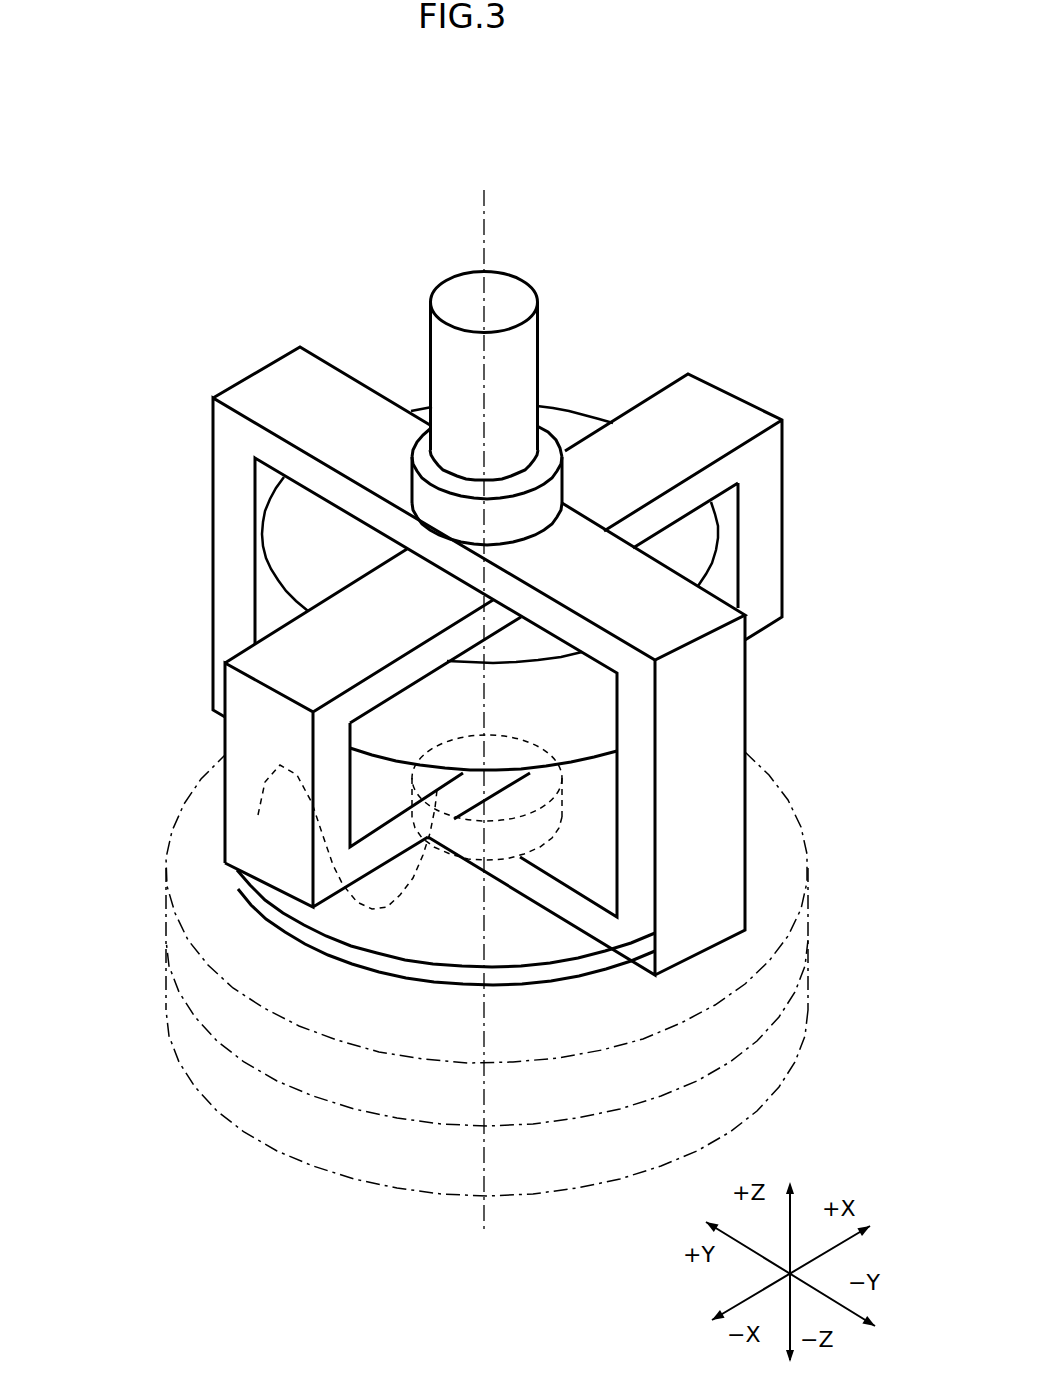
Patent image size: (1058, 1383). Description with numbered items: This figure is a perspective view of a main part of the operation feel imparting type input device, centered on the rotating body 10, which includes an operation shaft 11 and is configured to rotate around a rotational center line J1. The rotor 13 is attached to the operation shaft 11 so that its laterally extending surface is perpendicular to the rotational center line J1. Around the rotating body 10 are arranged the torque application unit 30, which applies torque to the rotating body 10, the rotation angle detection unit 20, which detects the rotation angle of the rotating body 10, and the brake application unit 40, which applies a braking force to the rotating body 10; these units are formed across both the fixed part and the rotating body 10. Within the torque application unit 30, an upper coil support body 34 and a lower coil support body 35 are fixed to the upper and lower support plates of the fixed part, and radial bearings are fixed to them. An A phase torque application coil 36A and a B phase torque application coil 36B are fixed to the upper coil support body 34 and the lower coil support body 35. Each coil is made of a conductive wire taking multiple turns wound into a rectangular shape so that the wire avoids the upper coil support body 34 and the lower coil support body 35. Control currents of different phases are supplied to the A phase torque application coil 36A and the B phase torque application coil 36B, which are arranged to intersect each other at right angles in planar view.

The rotating body 10 is at (542, 321).
The operation shaft 11 is at (442, 342).
The rotor 13 is at (298, 532).
The rotation angle detection unit 20 is at (161, 748).
The torque application unit 30 is at (161, 318).
The upper coil support body 34 is at (398, 490).
The lower coil support body 35 is at (401, 822).
The A phase torque application coil 36A is at (680, 406).
The B phase torque application coil 36B is at (697, 727).
The brake application unit 40 is at (161, 945).
The rotational center line J1 is at (476, 212).